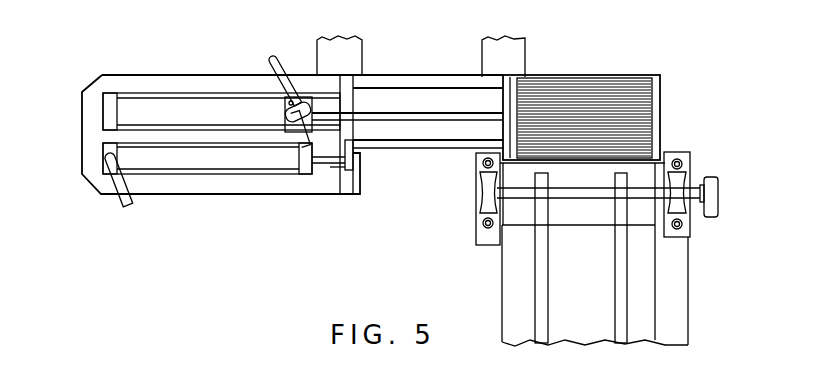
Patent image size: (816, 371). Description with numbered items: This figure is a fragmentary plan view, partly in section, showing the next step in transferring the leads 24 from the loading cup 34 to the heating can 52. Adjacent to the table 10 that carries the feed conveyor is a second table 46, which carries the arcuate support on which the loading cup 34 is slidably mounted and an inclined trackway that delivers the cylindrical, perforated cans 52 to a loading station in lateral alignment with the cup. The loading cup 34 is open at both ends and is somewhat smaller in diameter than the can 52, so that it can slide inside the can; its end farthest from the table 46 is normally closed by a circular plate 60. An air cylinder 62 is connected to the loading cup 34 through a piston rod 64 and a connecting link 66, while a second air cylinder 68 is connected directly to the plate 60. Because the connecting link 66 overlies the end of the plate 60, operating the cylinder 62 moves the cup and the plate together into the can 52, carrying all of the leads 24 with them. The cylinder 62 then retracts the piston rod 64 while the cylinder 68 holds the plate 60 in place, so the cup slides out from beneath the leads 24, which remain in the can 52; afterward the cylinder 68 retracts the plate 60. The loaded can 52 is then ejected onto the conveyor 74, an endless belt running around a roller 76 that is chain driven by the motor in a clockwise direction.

The table 10 is at (350, 58).
The leads 24 is at (630, 127).
The loading cup 34 is at (450, 150).
The second table 46 is at (670, 312).
The heating can 52 is at (634, 65).
The circular plate 60 is at (505, 80).
The air cylinder 62 is at (210, 160).
The piston rod 64 is at (330, 162).
The connecting link 66 is at (373, 163).
The air cylinder 68 is at (177, 110).
The conveyor 74 is at (618, 314).
The roller 76 is at (612, 206).